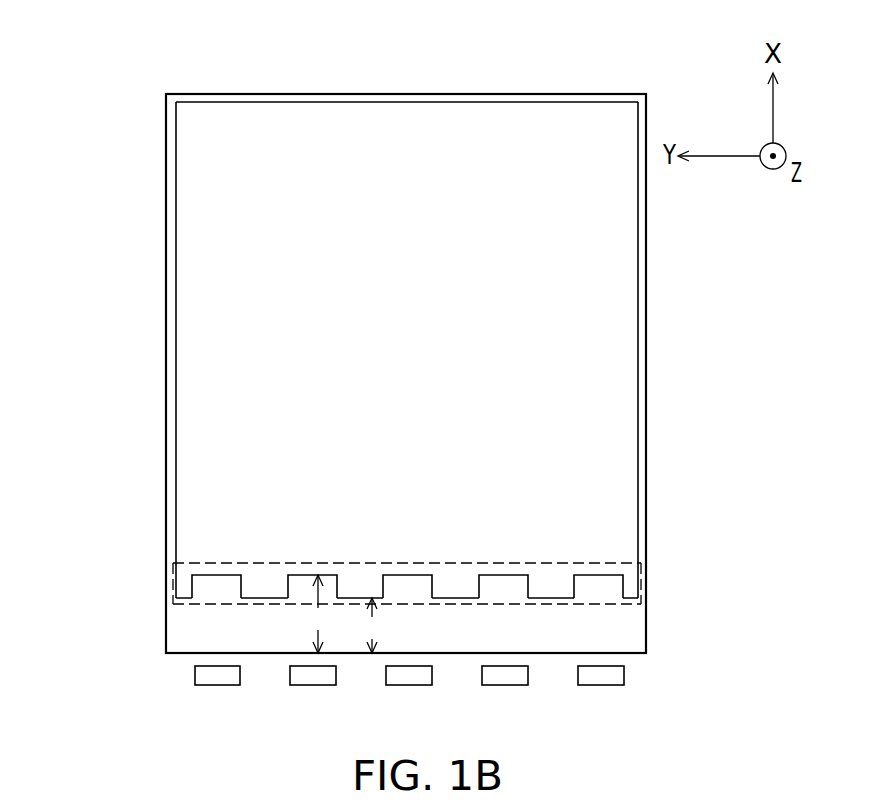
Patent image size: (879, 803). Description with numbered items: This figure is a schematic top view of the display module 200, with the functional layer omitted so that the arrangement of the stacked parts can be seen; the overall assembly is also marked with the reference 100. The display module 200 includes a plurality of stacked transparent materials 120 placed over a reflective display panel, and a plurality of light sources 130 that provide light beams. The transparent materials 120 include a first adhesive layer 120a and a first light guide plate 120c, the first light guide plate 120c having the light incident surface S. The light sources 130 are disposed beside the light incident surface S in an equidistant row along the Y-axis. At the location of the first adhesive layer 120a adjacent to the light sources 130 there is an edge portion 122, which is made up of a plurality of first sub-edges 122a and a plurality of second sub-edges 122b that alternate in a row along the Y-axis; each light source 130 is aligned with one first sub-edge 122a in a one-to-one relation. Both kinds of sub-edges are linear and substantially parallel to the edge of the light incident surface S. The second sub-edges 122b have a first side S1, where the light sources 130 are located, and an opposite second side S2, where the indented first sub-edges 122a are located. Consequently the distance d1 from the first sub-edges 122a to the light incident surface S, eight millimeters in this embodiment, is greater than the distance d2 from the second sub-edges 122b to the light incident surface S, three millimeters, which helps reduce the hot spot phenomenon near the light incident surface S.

The display device 100 is at (131, 62).
The transparent materials 120 is at (333, 350).
The first adhesive layer 120a is at (192, 218).
The first light guide plate 120c is at (170, 400).
The edge portion 122 is at (370, 615).
The first sub-edges 122a is at (310, 575).
The second sub-edges 122b is at (263, 598).
The light sources 130 is at (505, 677).
The display module 200 is at (744, 722).
The light incident surface S is at (543, 657).
The first side S1 is at (555, 608).
The second side S2 is at (559, 583).
The distance d1 is at (318, 614).
The distance d2 is at (372, 625).